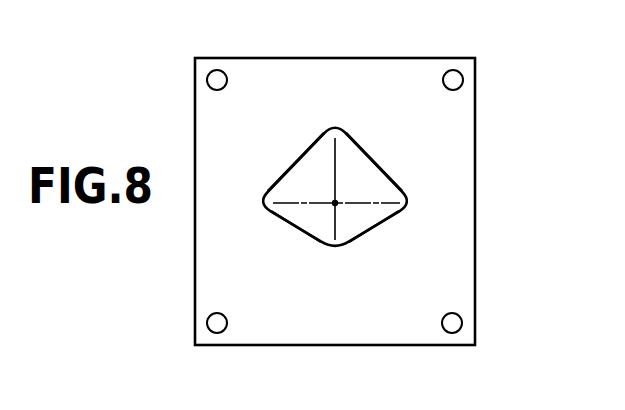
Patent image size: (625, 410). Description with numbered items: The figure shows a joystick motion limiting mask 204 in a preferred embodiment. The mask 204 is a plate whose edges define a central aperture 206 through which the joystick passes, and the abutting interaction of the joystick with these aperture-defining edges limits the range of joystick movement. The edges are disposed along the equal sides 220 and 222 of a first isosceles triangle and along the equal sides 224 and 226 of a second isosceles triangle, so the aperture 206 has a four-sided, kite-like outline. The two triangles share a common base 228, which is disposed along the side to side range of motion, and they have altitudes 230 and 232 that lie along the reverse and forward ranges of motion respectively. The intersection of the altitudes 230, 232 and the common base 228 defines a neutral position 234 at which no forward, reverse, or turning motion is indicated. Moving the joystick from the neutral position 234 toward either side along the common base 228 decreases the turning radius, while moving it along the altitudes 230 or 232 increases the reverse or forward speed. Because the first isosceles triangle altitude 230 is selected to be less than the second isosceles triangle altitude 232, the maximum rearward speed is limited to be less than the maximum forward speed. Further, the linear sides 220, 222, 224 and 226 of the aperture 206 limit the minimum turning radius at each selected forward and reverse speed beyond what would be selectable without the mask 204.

The mask 204 is at (452, 205).
The central aperture 206 is at (368, 168).
The equal side of second isosceles triangle 226 is at (375, 180).
The equal side of first isosceles triangle 222 is at (395, 218).
The equal side of second isosceles triangle 224 is at (312, 142).
The equal side of first isosceles triangle 220 is at (310, 240).
The second isosceles triangle altitude 232 is at (338, 158).
The first isosceles triangle altitude 230 is at (337, 225).
The common base 228 is at (297, 203).
The neutral position 234 is at (335, 203).